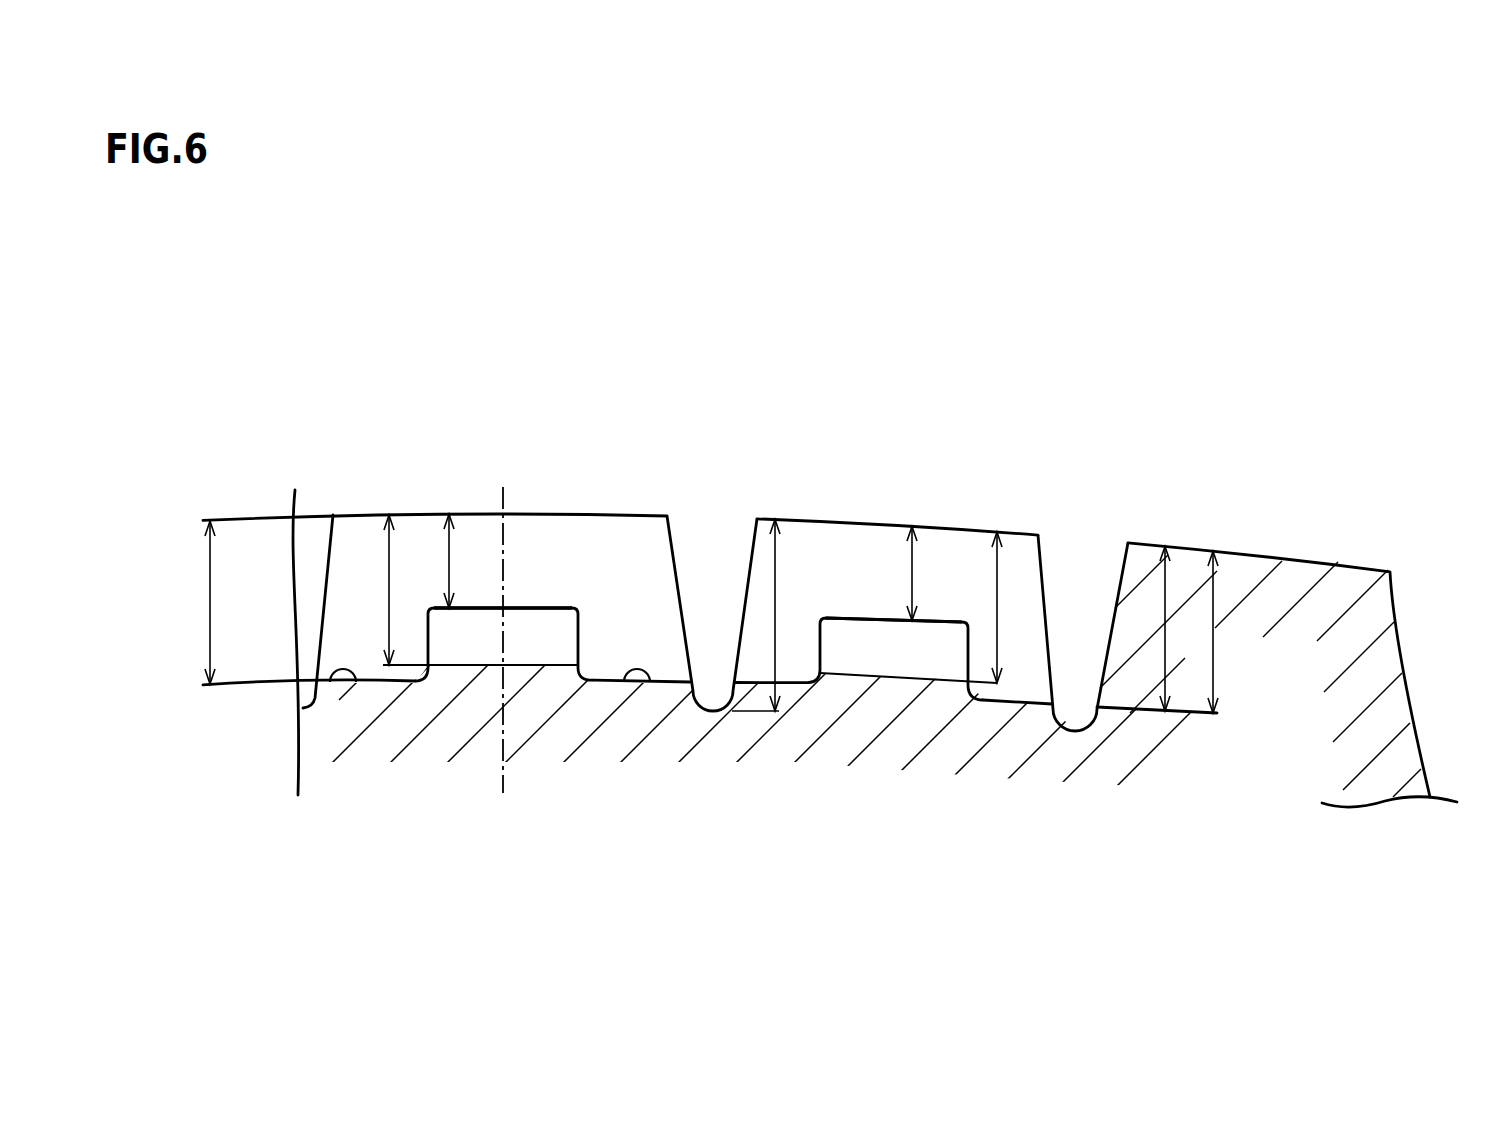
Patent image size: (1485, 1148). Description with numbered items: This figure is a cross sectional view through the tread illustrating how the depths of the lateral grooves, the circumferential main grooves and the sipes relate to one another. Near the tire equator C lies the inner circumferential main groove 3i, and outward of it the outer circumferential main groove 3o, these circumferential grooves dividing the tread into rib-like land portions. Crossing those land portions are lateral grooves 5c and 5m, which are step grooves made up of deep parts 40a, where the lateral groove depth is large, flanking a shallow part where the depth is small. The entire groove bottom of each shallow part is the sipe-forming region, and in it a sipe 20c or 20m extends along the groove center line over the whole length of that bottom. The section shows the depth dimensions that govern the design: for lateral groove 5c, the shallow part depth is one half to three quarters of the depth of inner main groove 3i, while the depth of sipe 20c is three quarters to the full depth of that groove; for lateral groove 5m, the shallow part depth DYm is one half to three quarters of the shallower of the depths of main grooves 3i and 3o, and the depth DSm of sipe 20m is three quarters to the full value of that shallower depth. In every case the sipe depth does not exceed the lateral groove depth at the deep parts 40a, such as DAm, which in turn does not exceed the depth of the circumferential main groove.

The lateral groove 5c is at (647, 443).
The lateral groove 5m is at (870, 490).
The inner circumferential main groove 3i is at (712, 557).
The outer circumferential main groove 3o is at (1084, 580).
The sipe 20c is at (472, 665).
The sipe 20m is at (928, 678).
The deep part 40a is at (356, 682).
The tire equator C is at (503, 777).
The lateral groove depth in sipe-forming region DYm is at (917, 573).
The sipe depth DSm is at (999, 579).
The lateral groove depth at deep part DAm is at (1166, 604).